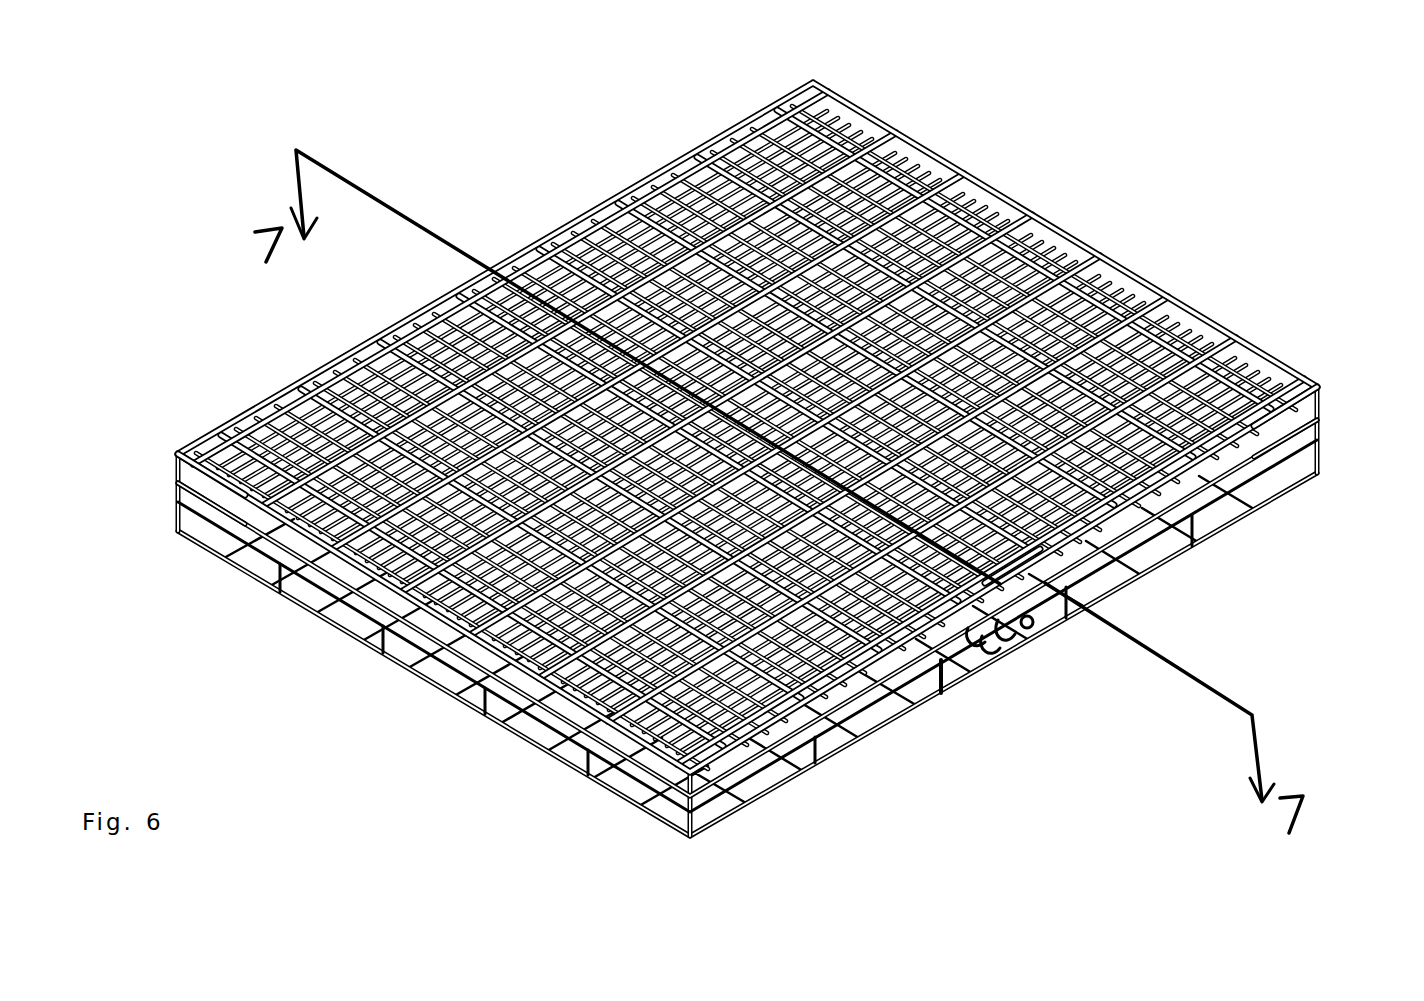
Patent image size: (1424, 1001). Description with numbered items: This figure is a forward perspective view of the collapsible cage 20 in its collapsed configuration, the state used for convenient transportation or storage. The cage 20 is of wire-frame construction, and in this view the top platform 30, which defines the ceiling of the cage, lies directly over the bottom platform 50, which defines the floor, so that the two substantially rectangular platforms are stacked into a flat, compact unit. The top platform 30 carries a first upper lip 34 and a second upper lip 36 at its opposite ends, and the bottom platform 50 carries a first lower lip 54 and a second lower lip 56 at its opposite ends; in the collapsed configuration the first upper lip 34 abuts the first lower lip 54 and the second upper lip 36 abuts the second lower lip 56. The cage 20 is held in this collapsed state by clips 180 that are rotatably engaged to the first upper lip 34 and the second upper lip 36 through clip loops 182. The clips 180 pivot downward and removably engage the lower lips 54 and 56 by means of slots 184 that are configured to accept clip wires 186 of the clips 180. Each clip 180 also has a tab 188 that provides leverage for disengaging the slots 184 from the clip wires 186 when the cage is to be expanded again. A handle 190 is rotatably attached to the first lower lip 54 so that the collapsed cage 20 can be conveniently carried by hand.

The collapsible cage 20 is at (742, 473).
The top platform 30 is at (1020, 207).
The first upper lip 34 is at (1325, 395).
The second upper lip 36 is at (165, 458).
The bottom platform 50 is at (484, 716).
The first lower lip 54 is at (1325, 445).
The second lower lip 56 is at (168, 512).
The clips 180 is at (1000, 640).
The clip loops 182 is at (1015, 562).
The slots 184 is at (973, 640).
The clip wires 186 is at (983, 647).
The tabs 188 is at (1003, 643).
The handle 190 is at (942, 700).